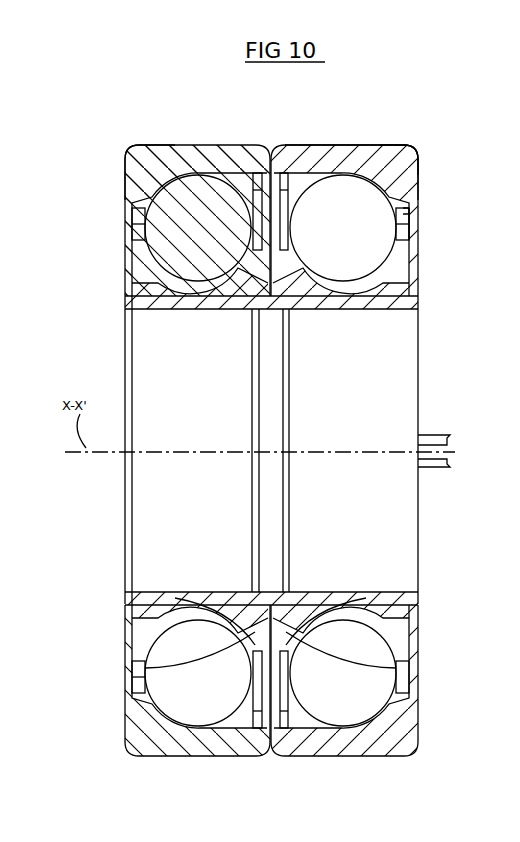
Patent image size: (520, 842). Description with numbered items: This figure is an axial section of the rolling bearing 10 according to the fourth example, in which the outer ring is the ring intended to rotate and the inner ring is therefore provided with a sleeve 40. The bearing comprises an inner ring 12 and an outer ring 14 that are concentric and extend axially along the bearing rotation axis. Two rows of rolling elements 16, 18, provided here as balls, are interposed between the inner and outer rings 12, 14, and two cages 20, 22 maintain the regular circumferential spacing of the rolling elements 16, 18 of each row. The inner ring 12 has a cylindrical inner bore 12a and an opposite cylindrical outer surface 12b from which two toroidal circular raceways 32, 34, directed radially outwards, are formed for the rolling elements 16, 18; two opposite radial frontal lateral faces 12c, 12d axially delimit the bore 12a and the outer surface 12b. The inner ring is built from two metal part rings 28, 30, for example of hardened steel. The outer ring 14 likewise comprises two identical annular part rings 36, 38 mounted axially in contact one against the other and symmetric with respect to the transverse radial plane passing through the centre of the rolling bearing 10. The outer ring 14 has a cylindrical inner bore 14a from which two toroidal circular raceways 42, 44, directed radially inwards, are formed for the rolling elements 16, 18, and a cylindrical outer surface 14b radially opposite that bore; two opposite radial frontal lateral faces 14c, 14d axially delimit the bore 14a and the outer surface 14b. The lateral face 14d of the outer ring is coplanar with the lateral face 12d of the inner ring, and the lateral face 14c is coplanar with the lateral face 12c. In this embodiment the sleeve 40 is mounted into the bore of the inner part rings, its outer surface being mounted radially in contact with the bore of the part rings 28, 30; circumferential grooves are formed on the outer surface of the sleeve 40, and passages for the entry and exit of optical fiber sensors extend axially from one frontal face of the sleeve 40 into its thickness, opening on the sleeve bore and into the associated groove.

The rolling bearing 10 is at (125, 292).
The inner ring 12 is at (122, 602).
The cylindrical inner bore 12a is at (200, 603).
The cylindrical outer surface 12b is at (320, 598).
The radial frontal lateral face 12c is at (122, 612).
The radial frontal lateral face 12d is at (415, 612).
The outer ring 14 is at (422, 146).
The cylindrical inner bore 14a is at (413, 213).
The cylindrical outer surface 14b is at (358, 146).
The radial frontal lateral face 14c is at (147, 166).
The radial frontal lateral face 14d is at (418, 168).
The rolling elements 16 is at (207, 237).
The rolling elements 18 is at (352, 237).
The cage 20 is at (128, 237).
The cage 22 is at (410, 229).
The part ring 28 is at (190, 606).
The part ring 30 is at (405, 602).
The toroidal circular raceway 32 is at (165, 672).
The toroidal circular raceway 34 is at (395, 665).
The annular part ring 36 is at (130, 178).
The annular part ring 38 is at (385, 176).
The sleeve 40 is at (400, 303).
The toroidal circular raceway 42 is at (190, 190).
The toroidal circular raceway 44 is at (345, 187).